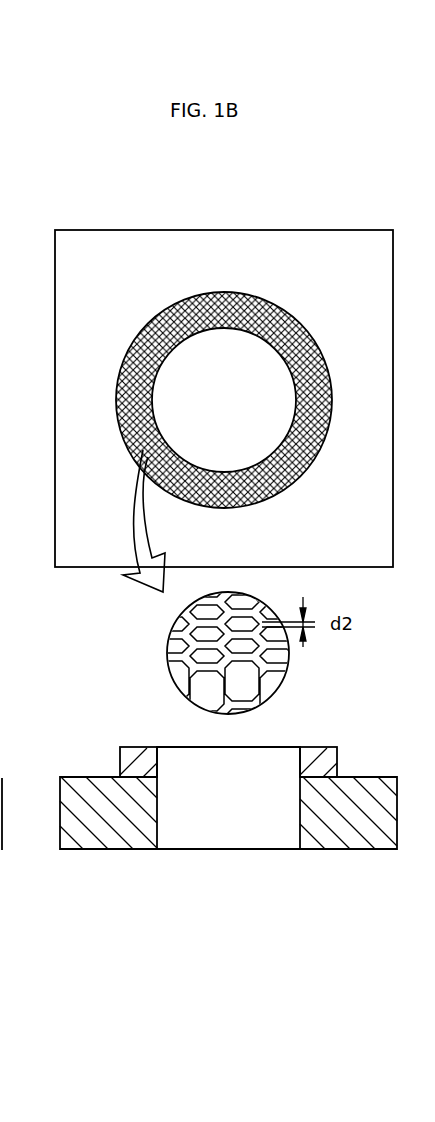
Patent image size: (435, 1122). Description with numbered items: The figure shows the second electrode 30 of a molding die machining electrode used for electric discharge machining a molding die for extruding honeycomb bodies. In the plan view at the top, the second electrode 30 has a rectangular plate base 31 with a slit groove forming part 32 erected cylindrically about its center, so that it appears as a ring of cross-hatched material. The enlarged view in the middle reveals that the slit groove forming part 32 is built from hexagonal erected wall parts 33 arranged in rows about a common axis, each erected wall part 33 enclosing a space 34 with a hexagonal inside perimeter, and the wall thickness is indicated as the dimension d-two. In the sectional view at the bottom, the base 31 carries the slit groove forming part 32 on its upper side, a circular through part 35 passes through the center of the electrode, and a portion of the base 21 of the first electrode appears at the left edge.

The base 21 is at (0, 741).
The second electrode 30 is at (255, 198).
The base 31 is at (327, 230).
The slit groove forming part 32 is at (145, 323).
The erected wall part 33 is at (213, 390).
The space 34 is at (177, 647).
The through part 35 is at (255, 782).